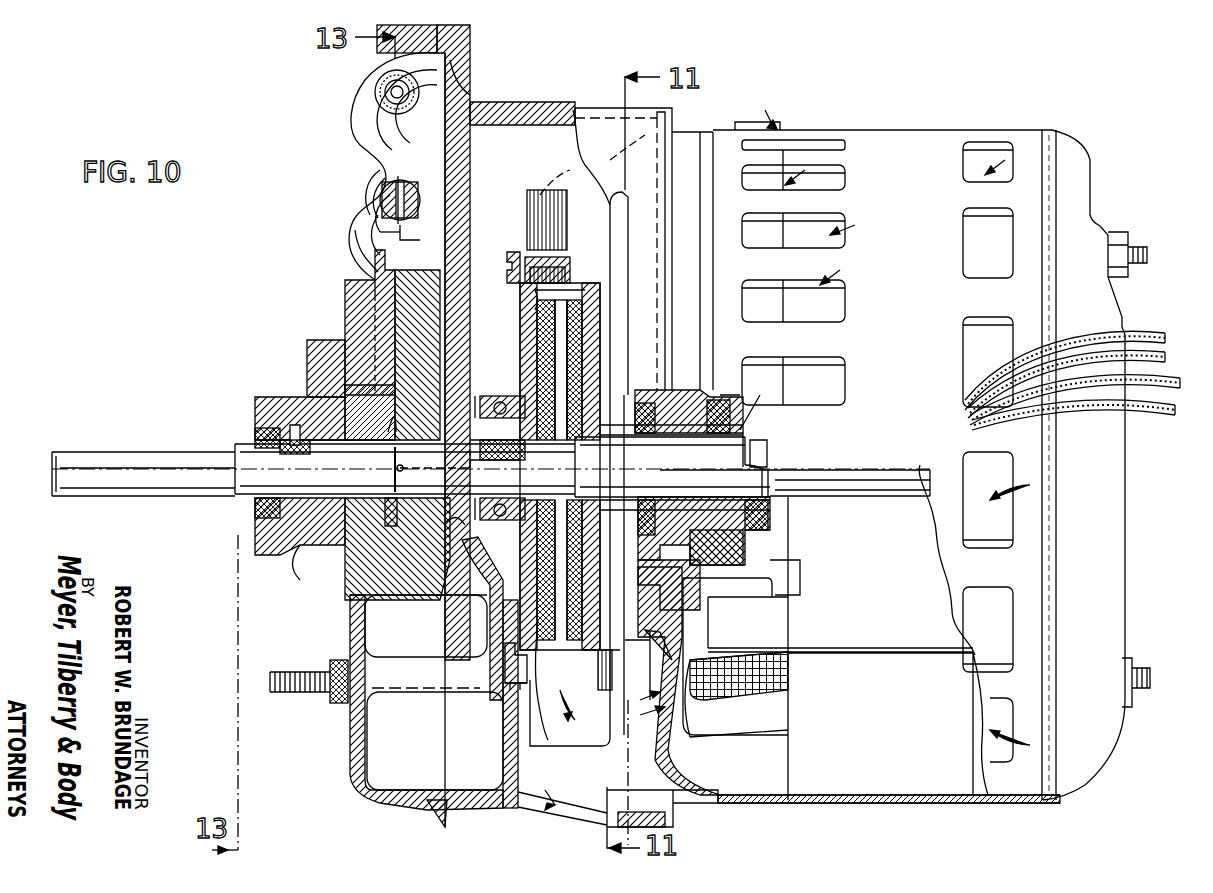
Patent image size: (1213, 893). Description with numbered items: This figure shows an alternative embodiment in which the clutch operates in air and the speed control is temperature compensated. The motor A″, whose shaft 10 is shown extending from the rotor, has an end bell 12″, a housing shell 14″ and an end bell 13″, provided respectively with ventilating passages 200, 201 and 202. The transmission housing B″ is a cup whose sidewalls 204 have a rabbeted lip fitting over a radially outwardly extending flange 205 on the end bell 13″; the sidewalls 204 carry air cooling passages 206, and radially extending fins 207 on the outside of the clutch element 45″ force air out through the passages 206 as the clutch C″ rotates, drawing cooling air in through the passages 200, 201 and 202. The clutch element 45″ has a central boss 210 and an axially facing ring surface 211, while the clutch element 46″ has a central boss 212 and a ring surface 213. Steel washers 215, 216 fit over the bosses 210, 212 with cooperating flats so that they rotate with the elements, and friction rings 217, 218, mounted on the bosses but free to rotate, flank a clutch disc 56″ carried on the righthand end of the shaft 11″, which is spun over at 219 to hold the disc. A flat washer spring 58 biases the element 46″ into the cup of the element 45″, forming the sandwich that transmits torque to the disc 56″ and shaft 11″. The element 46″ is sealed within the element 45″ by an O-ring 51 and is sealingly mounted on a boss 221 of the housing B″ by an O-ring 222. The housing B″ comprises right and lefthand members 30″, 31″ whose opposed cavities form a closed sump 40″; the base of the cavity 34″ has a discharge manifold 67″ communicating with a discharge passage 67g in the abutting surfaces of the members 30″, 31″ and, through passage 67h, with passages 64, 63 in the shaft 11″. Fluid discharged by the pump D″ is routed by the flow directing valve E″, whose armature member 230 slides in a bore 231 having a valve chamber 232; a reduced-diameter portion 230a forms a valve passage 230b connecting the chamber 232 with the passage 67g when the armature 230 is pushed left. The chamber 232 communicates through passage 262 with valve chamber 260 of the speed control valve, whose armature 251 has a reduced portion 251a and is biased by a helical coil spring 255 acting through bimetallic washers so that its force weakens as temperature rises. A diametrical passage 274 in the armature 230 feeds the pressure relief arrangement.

The motor shaft 10 is at (820, 492).
The shaft 11 is at (130, 459).
The end bell 12 is at (1040, 190).
The end bell 13 is at (650, 157).
The housing shell 14 is at (933, 138).
The housing member 30 is at (472, 94).
The housing member 31 is at (345, 92).
The cavity 34 is at (320, 375).
The sump 40 is at (405, 801).
The clutch element 45 is at (585, 220).
The clutch element 46 is at (515, 645).
The O-ring 51 is at (555, 665).
The clutch disc 56 is at (537, 569).
The flat washer spring 58 is at (435, 340).
The passage 63 is at (482, 474).
The passage 64 is at (392, 482).
The discharge manifold 67 is at (375, 381).
The discharge passage 67g is at (365, 297).
The passage 67h is at (413, 414).
The ventilating passages 200 is at (1020, 585).
The ventilating passages 201 is at (843, 381).
The ventilating passages 202 is at (674, 746).
The sidewalls 204 is at (555, 103).
The flange 205 is at (683, 818).
The air cooling passages 206 is at (570, 803).
The fins 207 is at (537, 202).
The central boss 210 is at (590, 408).
The ring surface 211 is at (530, 598).
The central boss 212 is at (490, 417).
The ring surface 213 is at (581, 326).
The steel washer 215 is at (605, 645).
The steel washer 216 is at (522, 614).
The friction ring 217 is at (565, 312).
The friction ring 218 is at (515, 282).
The spun-over shaft end 219 is at (578, 451).
The boss 221 is at (457, 541).
The O-ring 222 is at (442, 525).
The valve armature 230 is at (390, 226).
The reduced diameter portion 230a is at (372, 216).
The valve passage 230b is at (375, 206).
The bore 231 is at (373, 186).
The valve chamber 232 is at (410, 207).
The valve armature 251 is at (378, 100).
The reduced diameter portion 251a is at (368, 83).
The helical coil spring 255 is at (390, 135).
The valve chamber 260 is at (372, 113).
The passage 262 is at (358, 175).
The diametrical passage 274 is at (425, 180).
The motor A is at (867, 130).
The transmission housing B is at (513, 89).
The clutch C is at (515, 215).
The pump D is at (320, 530).
The flow directing valve E is at (430, 195).